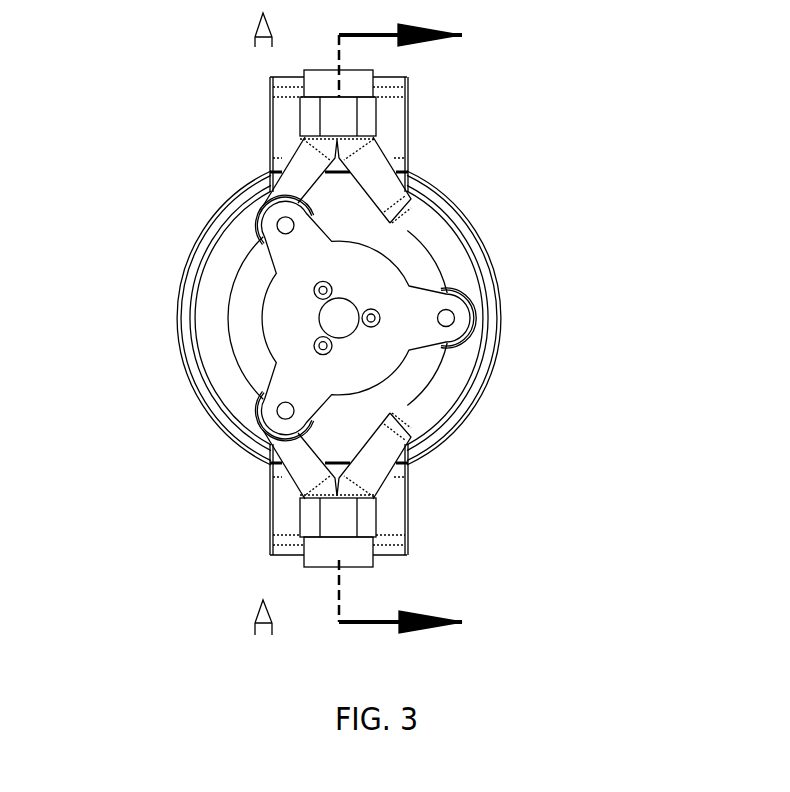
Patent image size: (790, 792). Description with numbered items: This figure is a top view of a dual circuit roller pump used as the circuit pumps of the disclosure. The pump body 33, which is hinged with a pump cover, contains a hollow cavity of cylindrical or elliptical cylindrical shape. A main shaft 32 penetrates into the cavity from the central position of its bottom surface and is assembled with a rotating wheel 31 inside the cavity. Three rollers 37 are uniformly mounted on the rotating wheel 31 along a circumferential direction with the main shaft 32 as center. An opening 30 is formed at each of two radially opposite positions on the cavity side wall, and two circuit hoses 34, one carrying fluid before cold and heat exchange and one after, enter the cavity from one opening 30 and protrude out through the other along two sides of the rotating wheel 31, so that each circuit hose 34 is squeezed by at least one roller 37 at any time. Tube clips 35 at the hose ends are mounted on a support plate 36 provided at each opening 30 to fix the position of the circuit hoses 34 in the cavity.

The opening 30 is at (338, 455).
The rotating wheel 31 is at (371, 317).
The main shaft 32 is at (340, 317).
The pump body 33 is at (468, 242).
The circuit hose 34 is at (380, 187).
The tube clip 35 is at (338, 119).
The support plate 36 is at (392, 111).
The roller 37 is at (257, 415).